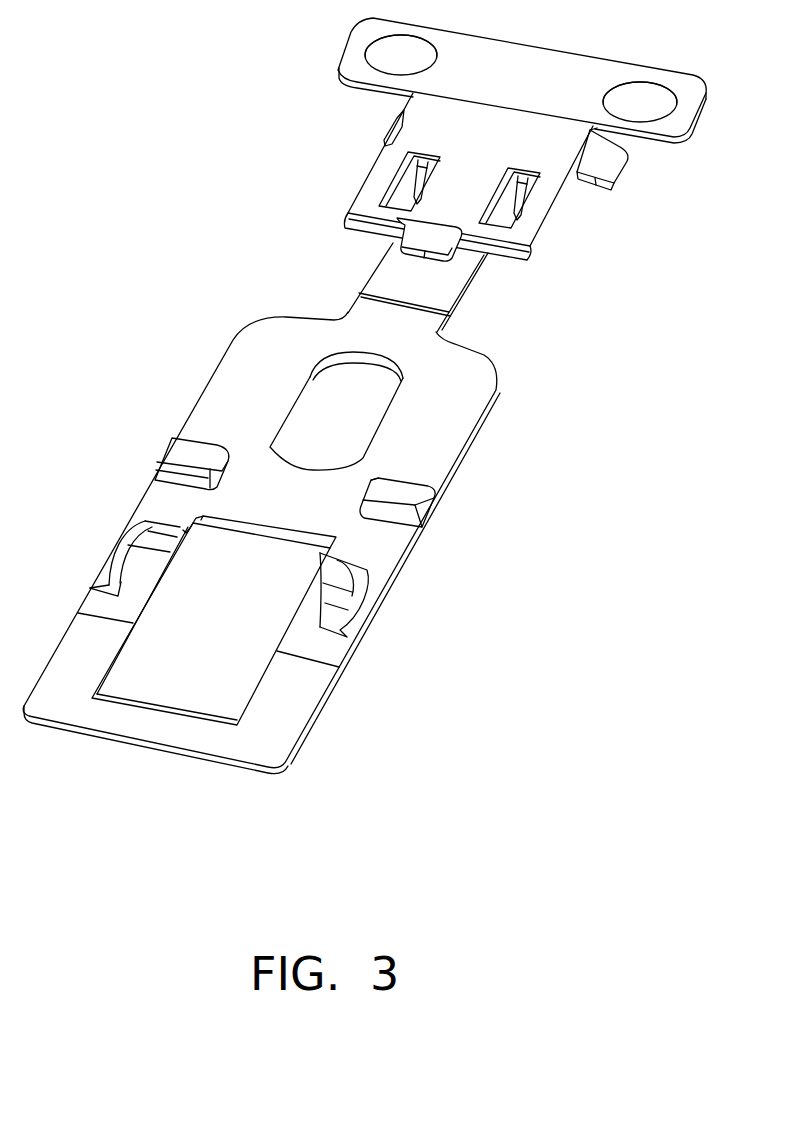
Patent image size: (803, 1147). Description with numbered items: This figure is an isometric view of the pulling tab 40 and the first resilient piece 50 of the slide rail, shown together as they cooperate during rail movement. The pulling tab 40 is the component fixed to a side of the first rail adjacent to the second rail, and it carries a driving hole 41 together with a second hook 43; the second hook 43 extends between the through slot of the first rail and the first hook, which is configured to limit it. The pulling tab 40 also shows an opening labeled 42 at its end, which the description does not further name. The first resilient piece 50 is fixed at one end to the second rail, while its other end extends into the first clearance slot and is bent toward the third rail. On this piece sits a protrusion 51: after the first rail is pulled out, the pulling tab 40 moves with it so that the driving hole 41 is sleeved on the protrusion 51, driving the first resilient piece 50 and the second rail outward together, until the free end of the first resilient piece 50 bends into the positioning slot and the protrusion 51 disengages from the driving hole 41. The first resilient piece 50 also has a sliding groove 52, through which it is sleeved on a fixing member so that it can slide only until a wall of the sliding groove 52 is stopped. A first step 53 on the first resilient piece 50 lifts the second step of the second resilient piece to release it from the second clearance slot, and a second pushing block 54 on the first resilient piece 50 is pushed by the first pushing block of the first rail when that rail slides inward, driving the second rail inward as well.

The pulling tab 40 is at (517, 60).
The driving hole 41 is at (398, 198).
The mounting hole 42 is at (642, 96).
The second hook 43 is at (417, 235).
The first resilient piece 50 is at (277, 715).
The protrusion 51 is at (520, 200).
The sliding groove 52 is at (365, 415).
The first step 53 is at (342, 573).
The second pushing block 54 is at (178, 452).